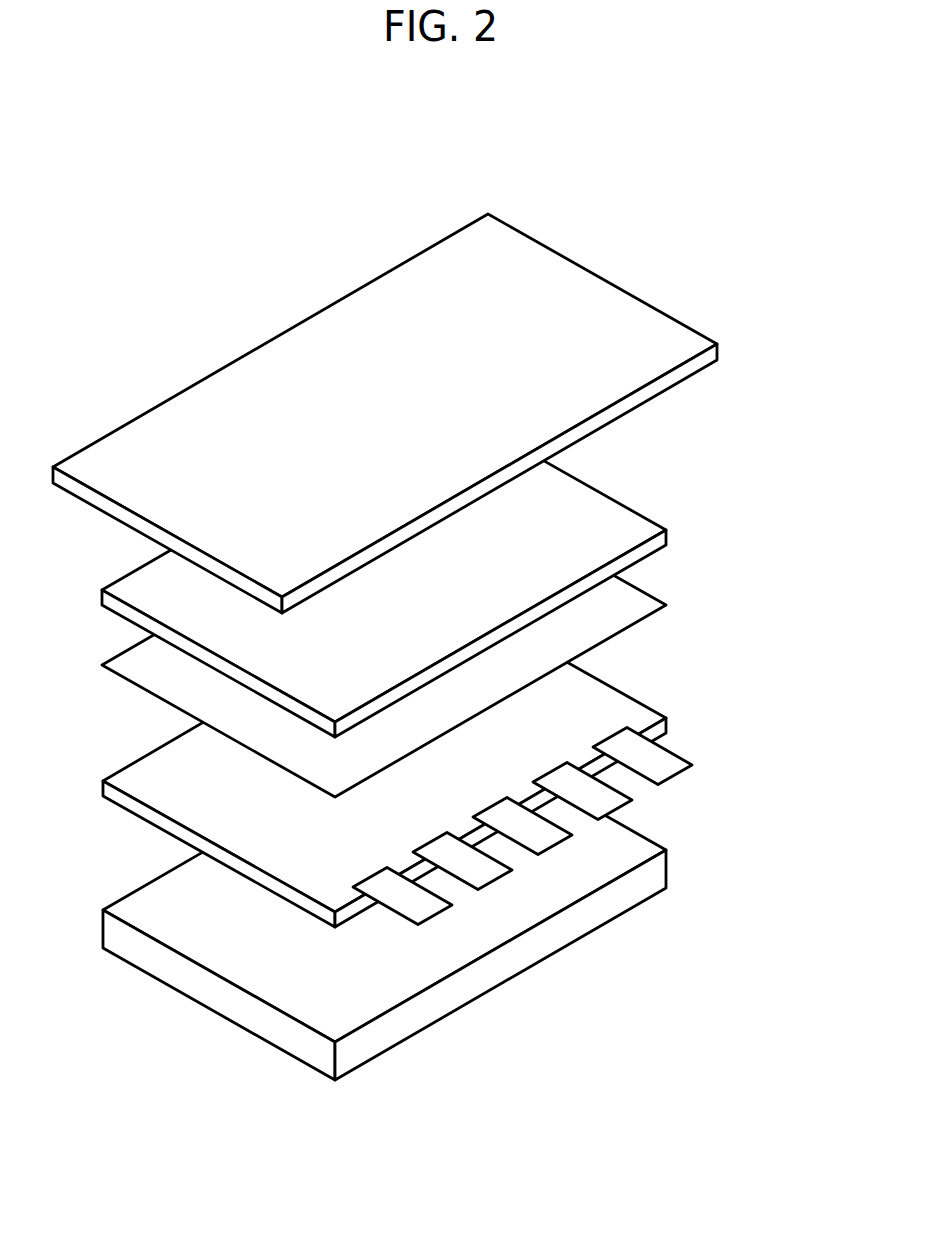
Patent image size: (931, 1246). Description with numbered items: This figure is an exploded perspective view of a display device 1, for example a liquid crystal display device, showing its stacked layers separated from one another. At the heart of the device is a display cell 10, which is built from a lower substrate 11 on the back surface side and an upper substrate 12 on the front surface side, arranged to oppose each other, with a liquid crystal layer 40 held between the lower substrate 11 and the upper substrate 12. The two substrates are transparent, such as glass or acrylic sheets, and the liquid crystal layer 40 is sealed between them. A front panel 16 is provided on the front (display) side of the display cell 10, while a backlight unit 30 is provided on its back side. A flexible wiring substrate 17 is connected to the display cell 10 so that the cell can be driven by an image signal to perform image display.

The display device 1 is at (435, 625).
The display cell 10 is at (460, 662).
The lower substrate 11 is at (600, 705).
The upper substrate 12 is at (773, 706).
The front panel 16 is at (627, 313).
The flexible wiring substrate 17 is at (655, 760).
The backlight unit 30 is at (630, 840).
The liquid crystal layer 40 is at (622, 602).